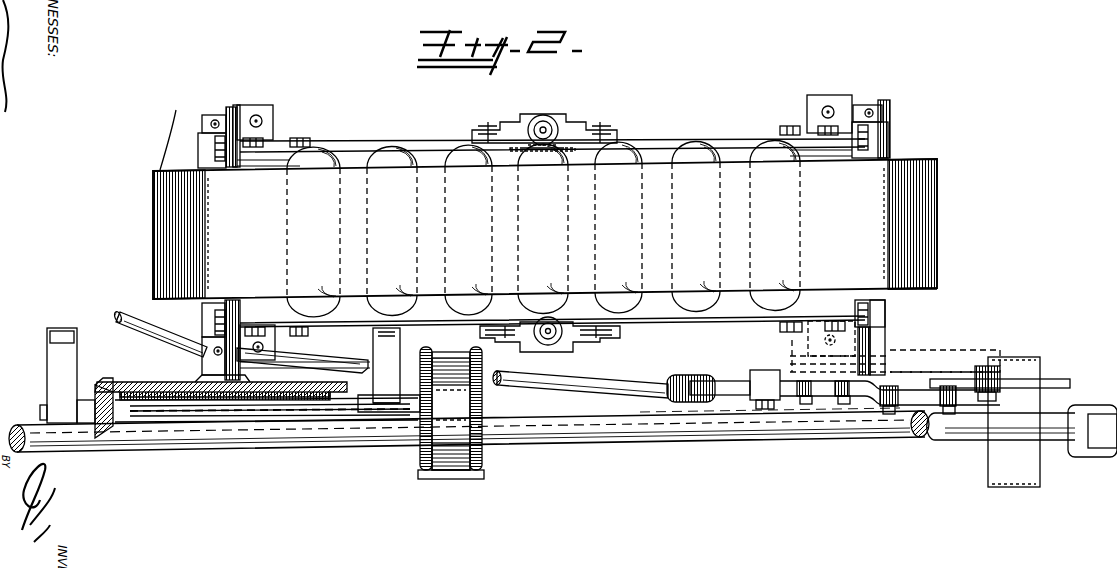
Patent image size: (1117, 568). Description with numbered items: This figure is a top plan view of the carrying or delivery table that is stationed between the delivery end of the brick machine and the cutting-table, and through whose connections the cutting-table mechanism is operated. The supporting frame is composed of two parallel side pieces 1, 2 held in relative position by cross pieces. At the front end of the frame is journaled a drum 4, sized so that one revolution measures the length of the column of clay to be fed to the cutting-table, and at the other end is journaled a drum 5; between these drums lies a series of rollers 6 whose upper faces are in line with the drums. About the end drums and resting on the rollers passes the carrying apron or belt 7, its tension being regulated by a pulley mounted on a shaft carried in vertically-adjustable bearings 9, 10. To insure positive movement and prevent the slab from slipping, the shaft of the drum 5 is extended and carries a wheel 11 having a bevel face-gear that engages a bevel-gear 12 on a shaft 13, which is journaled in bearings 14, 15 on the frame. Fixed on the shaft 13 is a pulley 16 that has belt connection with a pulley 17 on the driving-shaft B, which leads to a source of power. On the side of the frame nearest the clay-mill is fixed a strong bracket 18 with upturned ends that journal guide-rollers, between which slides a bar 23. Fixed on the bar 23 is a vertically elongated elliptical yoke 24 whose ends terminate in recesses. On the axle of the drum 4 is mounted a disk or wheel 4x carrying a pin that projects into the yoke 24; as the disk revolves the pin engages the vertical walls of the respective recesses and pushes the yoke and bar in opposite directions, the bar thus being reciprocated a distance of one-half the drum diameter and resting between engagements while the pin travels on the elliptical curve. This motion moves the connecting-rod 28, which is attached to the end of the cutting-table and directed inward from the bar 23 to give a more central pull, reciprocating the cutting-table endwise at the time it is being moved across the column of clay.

The side piece 1 is at (358, 328).
The side piece 2 is at (362, 143).
The drum 4 is at (942, 279).
The disk or wheel 4x is at (920, 365).
The drum 5 is at (172, 130).
The rollers 6 is at (447, 155).
The carrying apron or belt 7 is at (545, 229).
The vertically-adjustable bearing 9 is at (556, 347).
The vertically-adjustable bearing 10 is at (557, 118).
The wheel having bevel face-gear 11 is at (160, 383).
The bevel-gear 12 is at (107, 436).
The shaft 13 is at (248, 425).
The bearing 14 is at (40, 410).
The bearing 15 is at (267, 375).
The pulley 16 is at (451, 408).
The pulley 17 is at (455, 480).
The bracket 18 is at (757, 370).
The bar 23 is at (1055, 380).
The yoke 24 is at (925, 384).
The connecting-rod 28 is at (152, 338).
The driving-shaft B is at (690, 441).